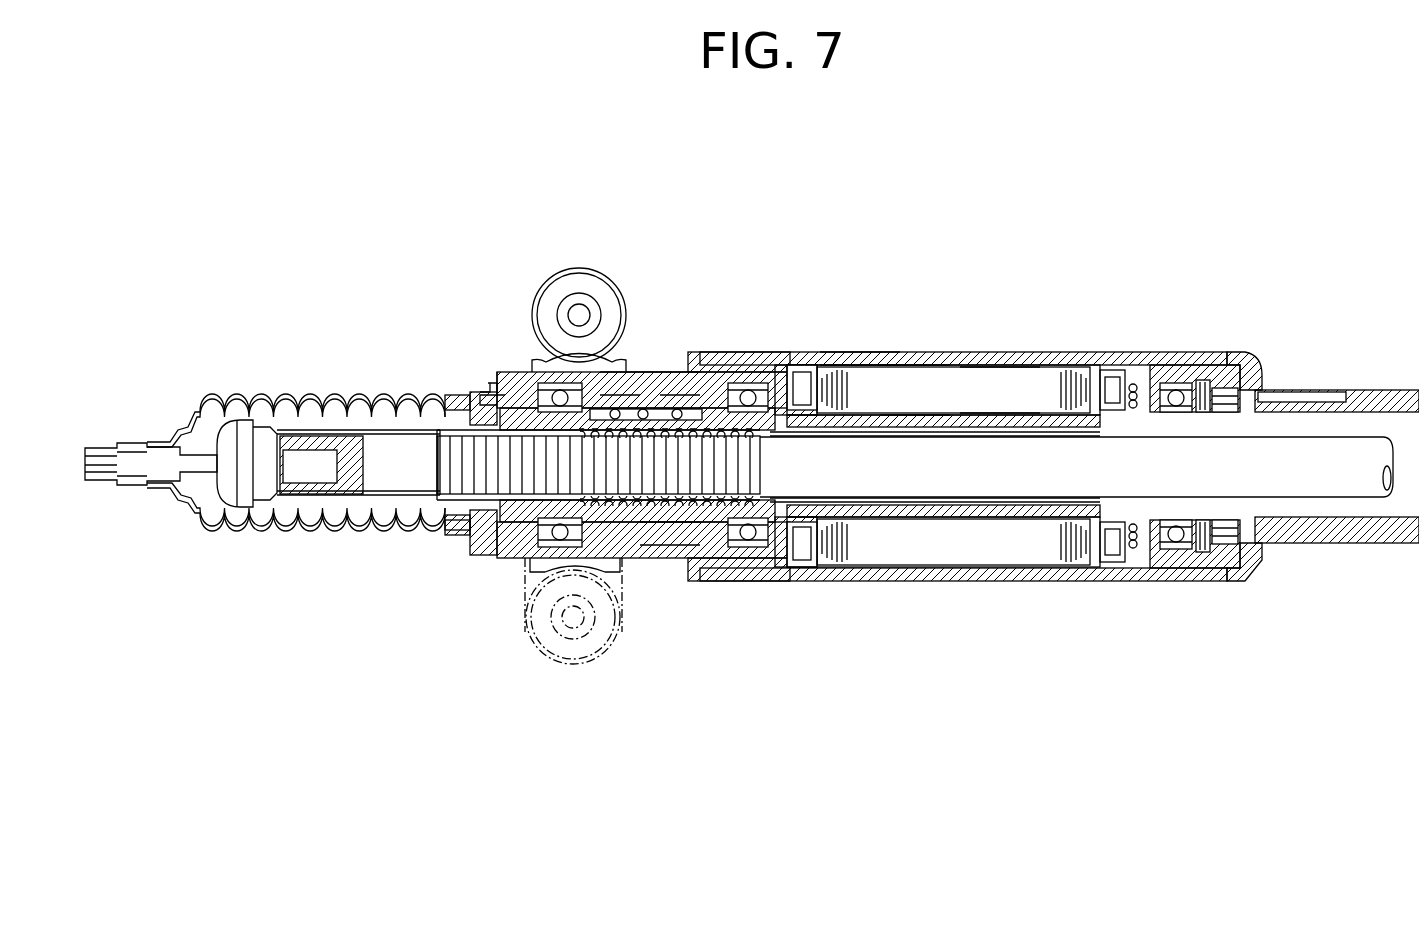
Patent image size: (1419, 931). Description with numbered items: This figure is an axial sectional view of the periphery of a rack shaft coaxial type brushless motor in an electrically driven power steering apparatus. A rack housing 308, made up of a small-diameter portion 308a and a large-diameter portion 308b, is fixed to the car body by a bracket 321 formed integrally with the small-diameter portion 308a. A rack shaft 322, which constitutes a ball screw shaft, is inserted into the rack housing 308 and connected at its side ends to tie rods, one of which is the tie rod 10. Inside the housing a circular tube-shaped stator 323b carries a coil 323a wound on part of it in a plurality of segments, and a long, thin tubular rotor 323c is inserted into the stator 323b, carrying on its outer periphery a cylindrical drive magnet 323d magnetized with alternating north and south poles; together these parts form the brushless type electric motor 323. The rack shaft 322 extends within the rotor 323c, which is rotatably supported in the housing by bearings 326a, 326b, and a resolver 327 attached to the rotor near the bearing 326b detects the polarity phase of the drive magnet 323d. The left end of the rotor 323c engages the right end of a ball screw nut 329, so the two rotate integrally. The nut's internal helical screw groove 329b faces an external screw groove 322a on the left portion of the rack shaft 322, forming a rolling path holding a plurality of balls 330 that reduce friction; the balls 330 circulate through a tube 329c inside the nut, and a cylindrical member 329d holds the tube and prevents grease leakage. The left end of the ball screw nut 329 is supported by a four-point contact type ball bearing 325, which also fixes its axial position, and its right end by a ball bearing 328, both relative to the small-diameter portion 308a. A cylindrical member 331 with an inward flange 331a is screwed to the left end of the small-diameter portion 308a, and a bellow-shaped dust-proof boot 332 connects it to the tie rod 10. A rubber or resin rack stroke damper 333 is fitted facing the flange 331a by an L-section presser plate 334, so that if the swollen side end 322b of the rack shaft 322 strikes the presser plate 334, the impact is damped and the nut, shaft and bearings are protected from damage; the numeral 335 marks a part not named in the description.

The tie rod 10 is at (93, 447).
The rack housing 308 is at (858, 240).
The small-diameter portion 308a is at (673, 370).
The large-diameter portion 308b is at (858, 356).
The bracket 321 is at (578, 268).
The rack shaft 322 is at (983, 582).
The external screw groove 322a is at (485, 548).
The swollen side end 322b is at (262, 510).
The brushless type electric motor 323 is at (1088, 264).
The coil 323a is at (1105, 360).
The stator 323b is at (1000, 373).
The rotor 323c is at (960, 413).
The drive magnet 323d is at (917, 407).
The 4-point contact type ball bearing 325 is at (522, 372).
The bearing 326a is at (779, 365).
The bearing 326b is at (1170, 378).
The resolver 327 is at (1197, 378).
The ball bearing 328 is at (742, 380).
The ball screw nut 329 is at (650, 560).
The internal helical screw groove 329b is at (672, 545).
The tube 329c is at (682, 375).
The cylindrical member 329d is at (641, 378).
The balls 330 is at (598, 627).
The cylindrical member 331 is at (513, 372).
The inward flange 331a is at (490, 385).
The dust-proof boot 332 is at (305, 385).
The rack stroke damper 333 is at (463, 390).
The presser plate 334 is at (425, 392).
The sleeve 335 is at (777, 438).